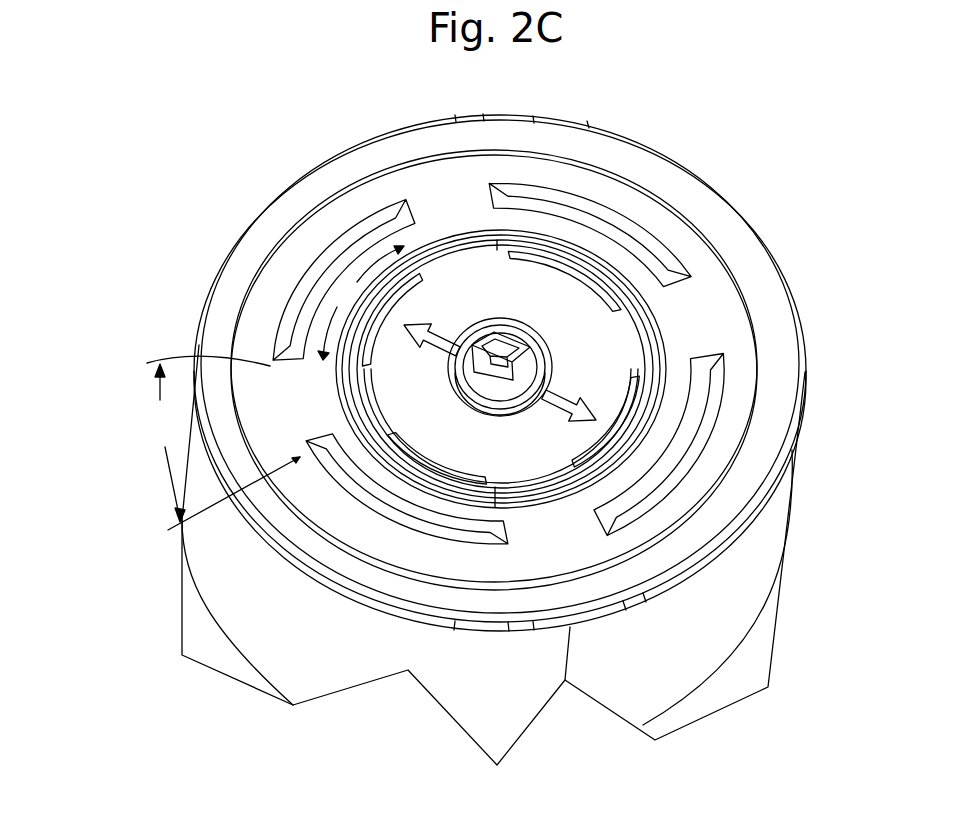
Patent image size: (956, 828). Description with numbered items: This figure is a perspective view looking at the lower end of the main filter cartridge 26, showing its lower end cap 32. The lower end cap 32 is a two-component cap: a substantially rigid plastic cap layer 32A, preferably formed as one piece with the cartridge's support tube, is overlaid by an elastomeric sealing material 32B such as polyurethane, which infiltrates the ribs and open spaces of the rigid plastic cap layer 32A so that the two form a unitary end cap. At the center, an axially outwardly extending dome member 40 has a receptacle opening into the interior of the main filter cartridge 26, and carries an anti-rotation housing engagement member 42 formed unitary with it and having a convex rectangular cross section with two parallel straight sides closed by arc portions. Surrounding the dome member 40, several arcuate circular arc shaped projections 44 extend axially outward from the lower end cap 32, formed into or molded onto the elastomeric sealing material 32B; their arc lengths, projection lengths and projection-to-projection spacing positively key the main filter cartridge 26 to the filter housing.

The main filter cartridge 26 is at (128, 350).
The lower end cap 32 is at (465, 183).
The substantially rigid plastic cap layer 32A is at (620, 364).
The elastomeric sealing material 32B is at (738, 341).
The dome member 40 is at (470, 398).
The anti-rotation housing engagement member 42 is at (490, 332).
The arcuate circular arc shaped projections 44 is at (323, 273).